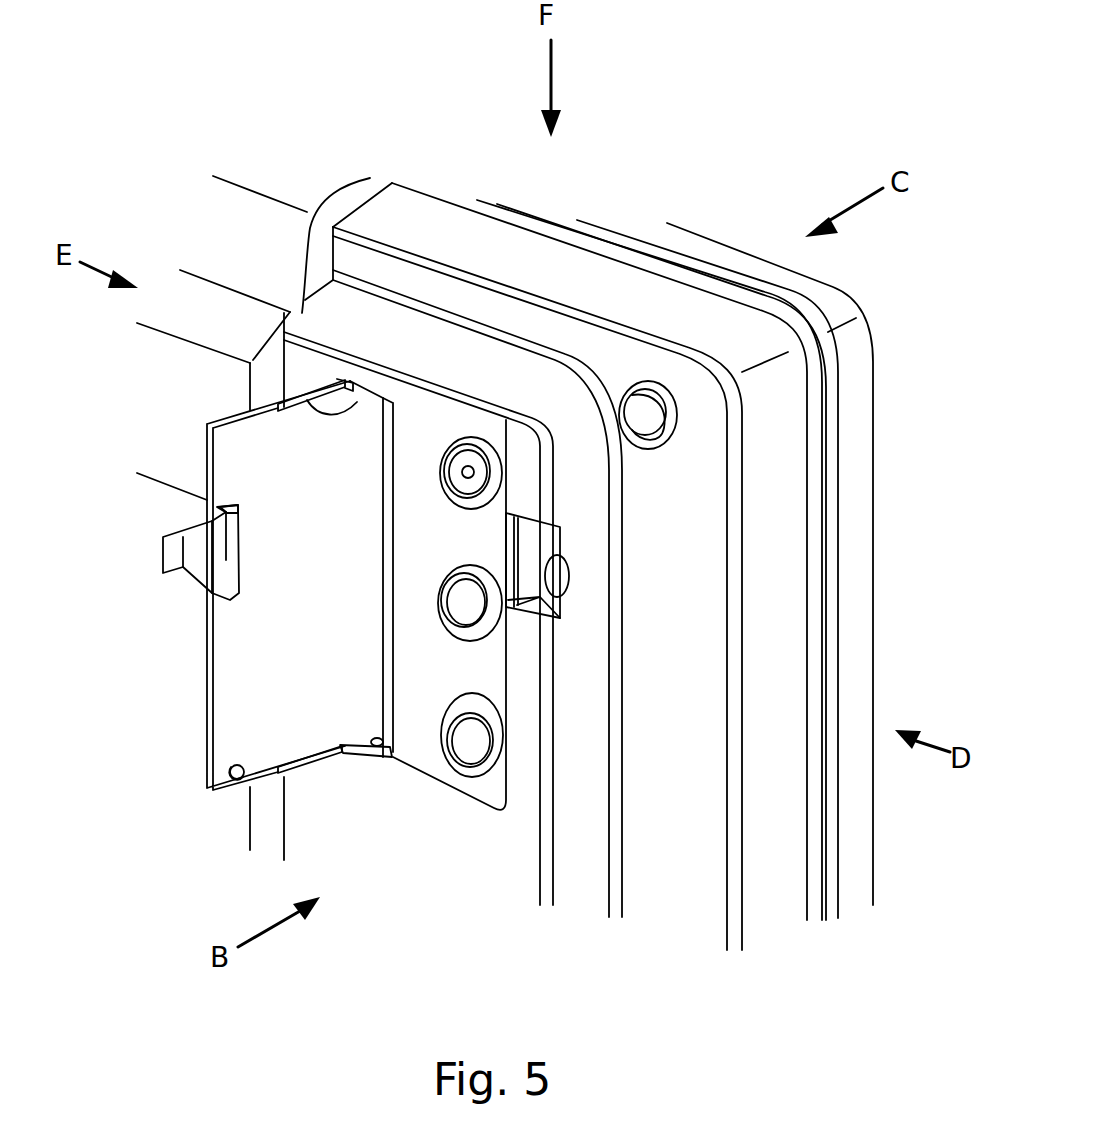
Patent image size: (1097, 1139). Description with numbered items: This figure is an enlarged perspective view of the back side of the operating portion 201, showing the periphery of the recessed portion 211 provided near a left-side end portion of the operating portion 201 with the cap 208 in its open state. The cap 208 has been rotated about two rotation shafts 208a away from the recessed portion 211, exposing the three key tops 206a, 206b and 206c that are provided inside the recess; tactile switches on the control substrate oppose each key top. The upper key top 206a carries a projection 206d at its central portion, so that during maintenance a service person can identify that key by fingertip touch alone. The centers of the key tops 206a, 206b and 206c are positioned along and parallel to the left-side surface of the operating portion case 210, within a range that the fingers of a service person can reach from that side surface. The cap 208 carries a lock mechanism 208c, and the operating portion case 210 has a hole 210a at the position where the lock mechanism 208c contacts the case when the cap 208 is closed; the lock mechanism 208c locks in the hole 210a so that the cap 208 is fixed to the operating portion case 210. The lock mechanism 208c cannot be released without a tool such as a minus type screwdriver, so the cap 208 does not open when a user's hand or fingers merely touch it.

The operating portion 201 is at (660, 148).
The key top 206a is at (481, 462).
The key top 206b is at (462, 607).
The key top 206c is at (472, 752).
The projection 206d is at (461, 468).
The cap 208 is at (240, 443).
The rotation shaft 208a is at (278, 401).
The lock mechanism 208c is at (203, 563).
The operating portion case 210 is at (708, 532).
The hole 210a is at (560, 580).
The recessed portion 211 is at (410, 728).